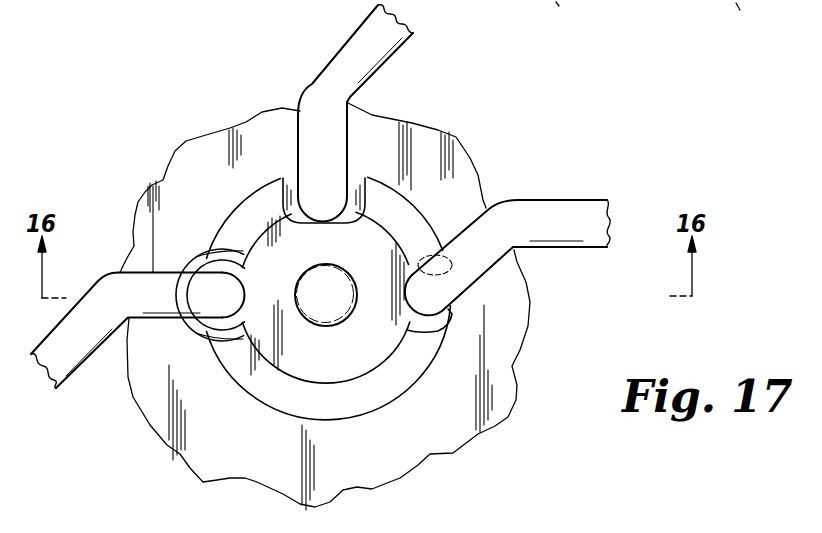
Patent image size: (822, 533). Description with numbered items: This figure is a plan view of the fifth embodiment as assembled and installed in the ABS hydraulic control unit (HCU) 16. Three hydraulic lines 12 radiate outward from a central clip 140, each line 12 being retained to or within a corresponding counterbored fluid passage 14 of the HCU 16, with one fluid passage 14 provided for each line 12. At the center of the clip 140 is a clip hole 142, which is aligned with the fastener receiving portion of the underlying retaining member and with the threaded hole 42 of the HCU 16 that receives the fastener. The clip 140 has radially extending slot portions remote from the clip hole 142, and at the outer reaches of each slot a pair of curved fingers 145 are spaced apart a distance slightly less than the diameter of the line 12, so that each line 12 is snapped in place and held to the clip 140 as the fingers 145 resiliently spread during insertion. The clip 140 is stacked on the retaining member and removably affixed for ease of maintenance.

The hydraulic line 12 is at (403, 47).
The counterbored fluid passage 14 is at (749, 13).
The ABS hydraulic control unit (HCU) 16 is at (465, 158).
The threaded hole 42 is at (567, 13).
The clip 140 is at (364, 347).
The clip hole 142 is at (318, 293).
The curved fingers 145 is at (432, 333).